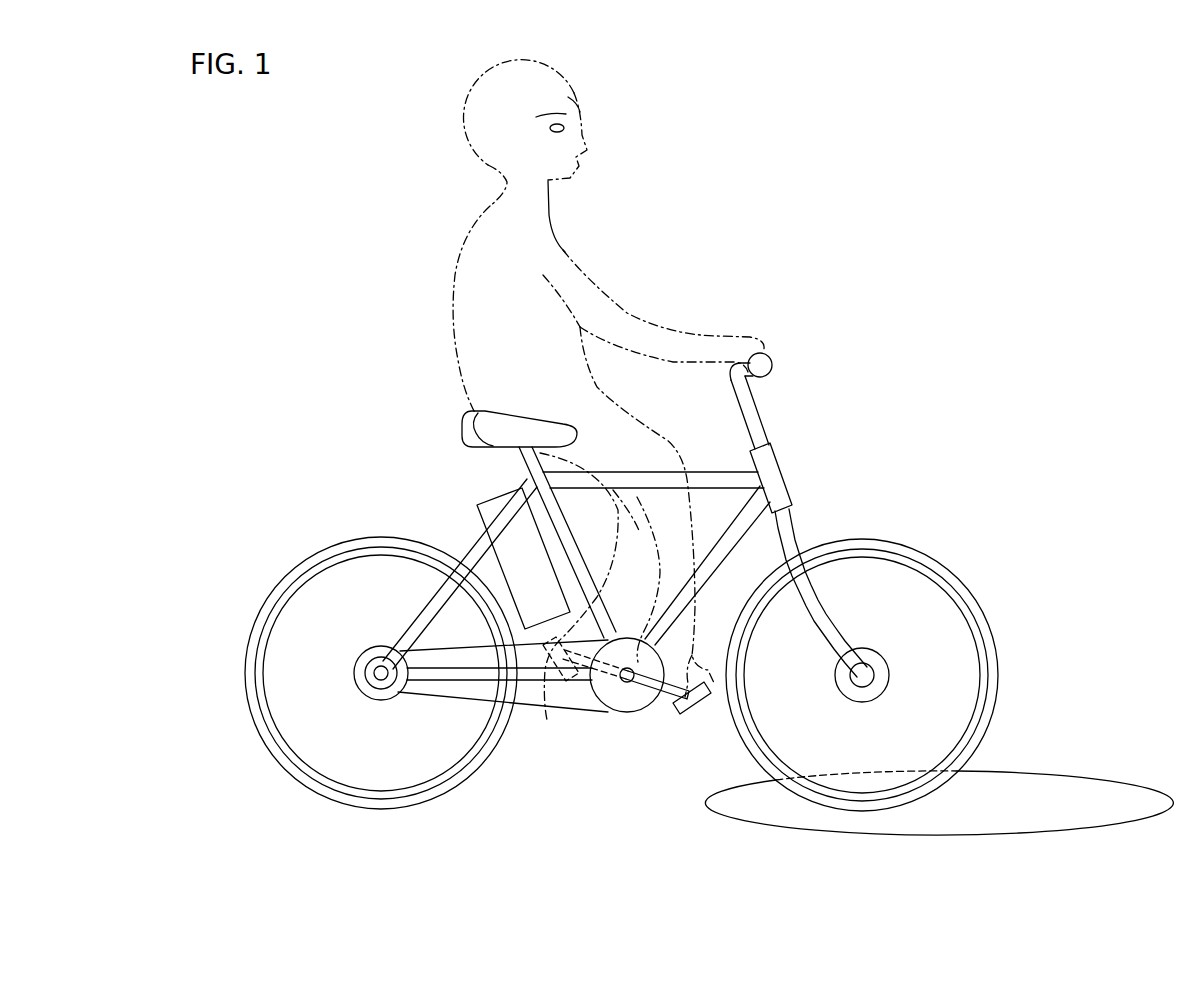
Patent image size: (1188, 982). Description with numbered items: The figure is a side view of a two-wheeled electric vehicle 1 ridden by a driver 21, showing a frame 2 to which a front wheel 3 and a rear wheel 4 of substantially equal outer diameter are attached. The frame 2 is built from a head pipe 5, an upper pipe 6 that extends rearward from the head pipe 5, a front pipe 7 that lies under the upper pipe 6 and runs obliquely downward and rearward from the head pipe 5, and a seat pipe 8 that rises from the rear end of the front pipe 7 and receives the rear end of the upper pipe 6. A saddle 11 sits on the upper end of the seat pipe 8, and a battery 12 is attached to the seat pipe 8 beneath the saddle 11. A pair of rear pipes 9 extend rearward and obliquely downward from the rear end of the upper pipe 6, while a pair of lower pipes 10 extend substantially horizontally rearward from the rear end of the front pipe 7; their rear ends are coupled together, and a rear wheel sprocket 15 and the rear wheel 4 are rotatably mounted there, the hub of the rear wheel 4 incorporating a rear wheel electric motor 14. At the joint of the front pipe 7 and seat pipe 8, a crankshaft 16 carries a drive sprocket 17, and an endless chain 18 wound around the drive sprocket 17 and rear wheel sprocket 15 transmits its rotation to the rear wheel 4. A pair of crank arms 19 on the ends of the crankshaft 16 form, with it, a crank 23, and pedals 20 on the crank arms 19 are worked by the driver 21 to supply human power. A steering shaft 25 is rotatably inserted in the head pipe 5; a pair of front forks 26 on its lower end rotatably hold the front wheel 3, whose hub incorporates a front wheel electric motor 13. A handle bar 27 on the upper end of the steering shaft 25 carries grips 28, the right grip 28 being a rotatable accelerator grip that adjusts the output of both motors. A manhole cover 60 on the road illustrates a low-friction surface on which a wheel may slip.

The two-wheeled electric vehicle 1 is at (698, 255).
The frame 2 is at (712, 460).
The front wheel 3 is at (986, 610).
The rear wheel 4 is at (262, 600).
The head pipe 5 is at (777, 478).
The upper pipe 6 is at (630, 484).
The front pipe 7 is at (723, 542).
The seat pipe 8 is at (549, 544).
The rear pipes 9 is at (425, 613).
The lower pipes 10 is at (428, 681).
The saddle 11 is at (470, 427).
The battery 12 is at (483, 510).
The front wheel electric motor 13 is at (862, 648).
The rear wheel electric motor 14 is at (376, 700).
The rear wheel sprocket 15 is at (357, 668).
The crankshaft 16 is at (628, 690).
The drive sprocket 17 is at (597, 712).
The chain 18 is at (522, 712).
The crank arms 19 is at (655, 708).
The pedals 20 is at (696, 708).
The driver 21 is at (462, 108).
The crank 23 is at (702, 810).
The steering shaft 25 is at (757, 430).
The front forks 26 is at (830, 637).
The handle bar 27 is at (746, 378).
The grips 28 is at (772, 363).
The manhole cover 60 is at (1080, 792).